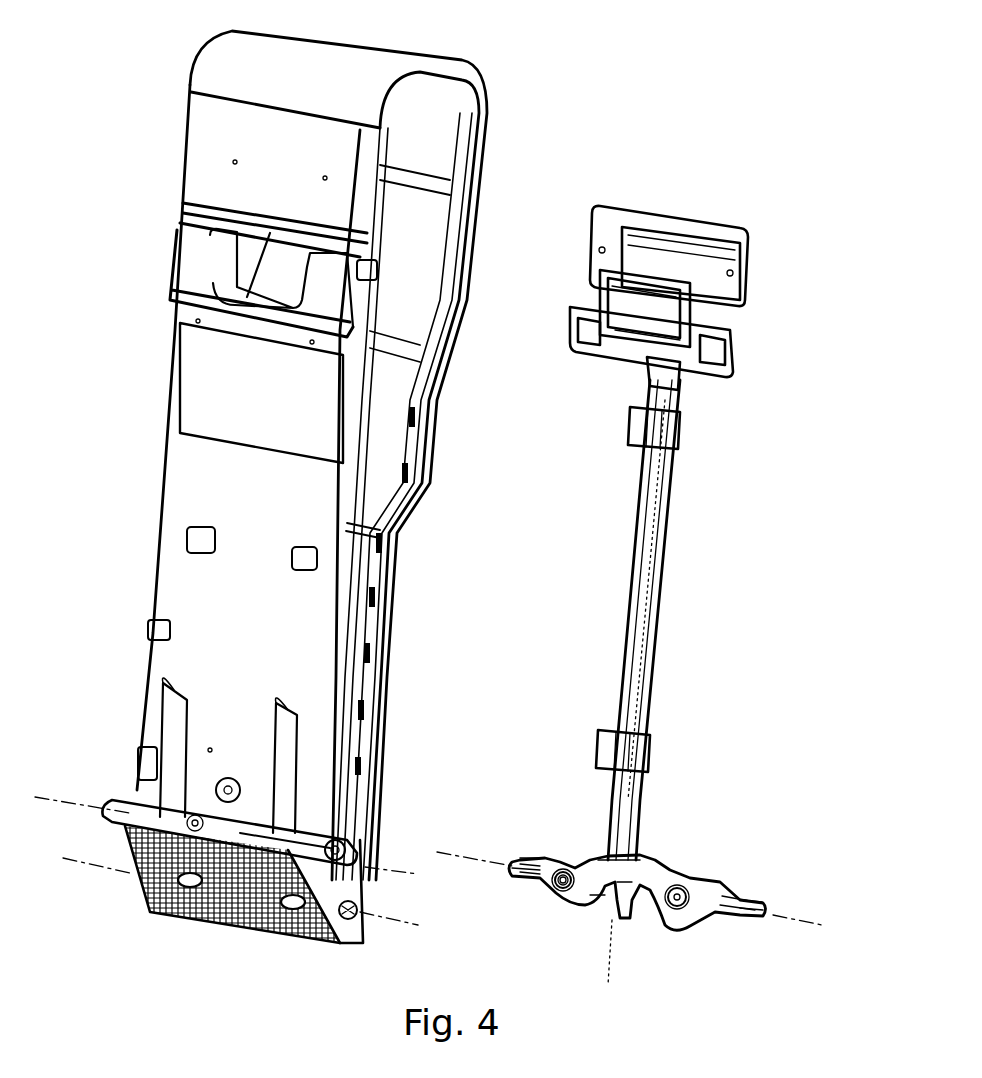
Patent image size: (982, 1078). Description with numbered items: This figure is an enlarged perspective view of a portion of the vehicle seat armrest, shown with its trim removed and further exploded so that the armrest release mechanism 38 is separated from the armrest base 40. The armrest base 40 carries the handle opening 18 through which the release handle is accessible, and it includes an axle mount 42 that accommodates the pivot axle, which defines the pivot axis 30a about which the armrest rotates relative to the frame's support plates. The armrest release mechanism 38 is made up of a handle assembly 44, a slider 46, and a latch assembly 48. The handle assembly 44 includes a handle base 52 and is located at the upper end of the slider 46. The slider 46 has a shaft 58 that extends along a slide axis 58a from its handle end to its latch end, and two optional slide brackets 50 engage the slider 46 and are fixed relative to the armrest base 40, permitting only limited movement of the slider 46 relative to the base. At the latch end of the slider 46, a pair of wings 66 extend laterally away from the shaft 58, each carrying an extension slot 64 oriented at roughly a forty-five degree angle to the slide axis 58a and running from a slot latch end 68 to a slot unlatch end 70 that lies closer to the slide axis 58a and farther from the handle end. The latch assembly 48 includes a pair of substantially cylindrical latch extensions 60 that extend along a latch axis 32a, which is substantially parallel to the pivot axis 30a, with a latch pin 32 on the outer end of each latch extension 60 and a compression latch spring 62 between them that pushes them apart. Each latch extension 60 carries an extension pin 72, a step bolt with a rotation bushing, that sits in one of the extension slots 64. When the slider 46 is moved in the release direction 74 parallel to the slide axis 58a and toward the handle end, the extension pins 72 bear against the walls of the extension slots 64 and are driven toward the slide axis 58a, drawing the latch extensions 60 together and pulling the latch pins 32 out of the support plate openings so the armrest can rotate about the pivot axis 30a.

The handle opening 18 is at (228, 267).
The pivot axis 30a is at (402, 863).
The latch pin 32 is at (515, 872).
The latch axis 32a is at (108, 868).
The armrest release mechanism 38 is at (763, 165).
The armrest base 40 is at (445, 98).
The axle mount 42 is at (312, 833).
The handle assembly 44 is at (340, 913).
The slider 46 is at (678, 603).
The latch assembly 48 is at (708, 822).
The slide bracket 50 is at (632, 438).
The handle base 52 is at (593, 238).
The shaft 58 is at (627, 547).
The slide axis 58a is at (612, 962).
The latch extension 60 is at (550, 860).
The latch spring 62 is at (615, 890).
The extension slot 64 is at (670, 910).
The wing 66 is at (650, 866).
The slot latch end 68 is at (555, 878).
The slot unlatch end 70 is at (605, 895).
The extension pin 72 is at (683, 892).
The release direction 74 is at (787, 358).